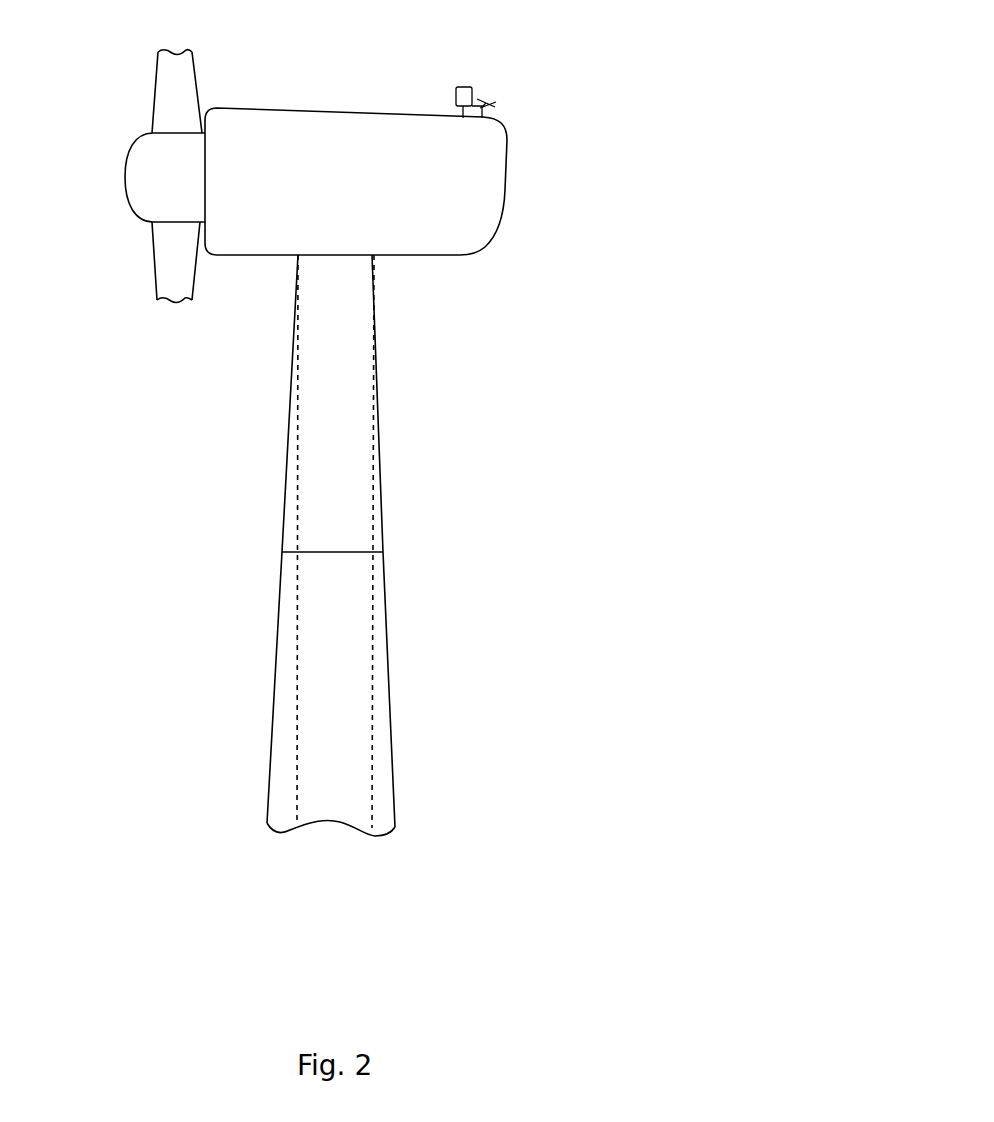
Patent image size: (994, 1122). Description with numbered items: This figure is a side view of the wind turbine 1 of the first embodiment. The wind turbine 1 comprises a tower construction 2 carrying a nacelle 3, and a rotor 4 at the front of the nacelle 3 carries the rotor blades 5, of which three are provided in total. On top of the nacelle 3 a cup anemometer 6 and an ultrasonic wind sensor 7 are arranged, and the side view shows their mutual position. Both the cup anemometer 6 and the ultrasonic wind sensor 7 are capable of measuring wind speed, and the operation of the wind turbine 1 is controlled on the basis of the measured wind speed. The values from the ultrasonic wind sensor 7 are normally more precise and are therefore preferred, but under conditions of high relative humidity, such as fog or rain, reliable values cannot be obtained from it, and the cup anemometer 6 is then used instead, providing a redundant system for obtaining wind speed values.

The wind turbine 1 is at (570, 525).
The tower construction 2 is at (328, 690).
The nacelle 3 is at (293, 147).
The rotor 4 is at (160, 173).
The rotor blades 5 is at (173, 105).
The cup anemometer 6 is at (490, 97).
The ultrasonic wind sensor 7 is at (464, 80).